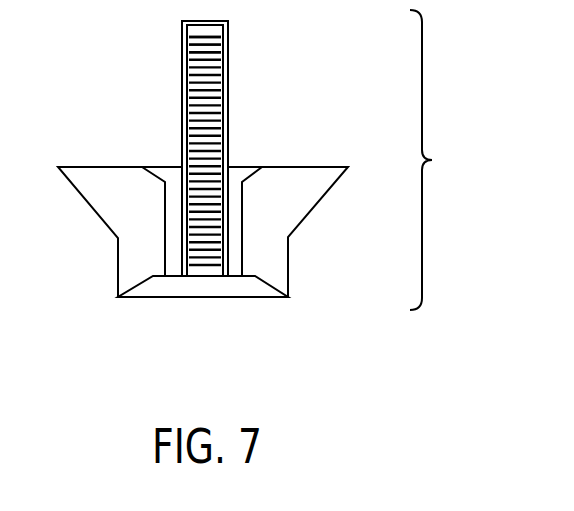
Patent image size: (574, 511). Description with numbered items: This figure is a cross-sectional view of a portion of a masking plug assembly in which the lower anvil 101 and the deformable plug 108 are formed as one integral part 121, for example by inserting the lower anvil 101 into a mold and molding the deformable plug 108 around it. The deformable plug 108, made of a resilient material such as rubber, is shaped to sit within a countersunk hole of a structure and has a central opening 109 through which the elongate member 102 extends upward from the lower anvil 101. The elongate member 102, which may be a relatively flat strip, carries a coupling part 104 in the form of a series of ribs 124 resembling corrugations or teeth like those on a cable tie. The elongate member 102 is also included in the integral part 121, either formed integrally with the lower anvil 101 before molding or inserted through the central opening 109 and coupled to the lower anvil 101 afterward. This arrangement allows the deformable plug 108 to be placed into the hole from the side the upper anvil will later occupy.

The lower anvil 101 is at (238, 297).
The elongate member 102 is at (228, 63).
The coupling part 104 is at (197, 97).
The deformable plug 108 is at (320, 205).
The central opening 109 is at (233, 182).
The integral part 121 is at (438, 160).
The series of ribs 124 is at (193, 41).